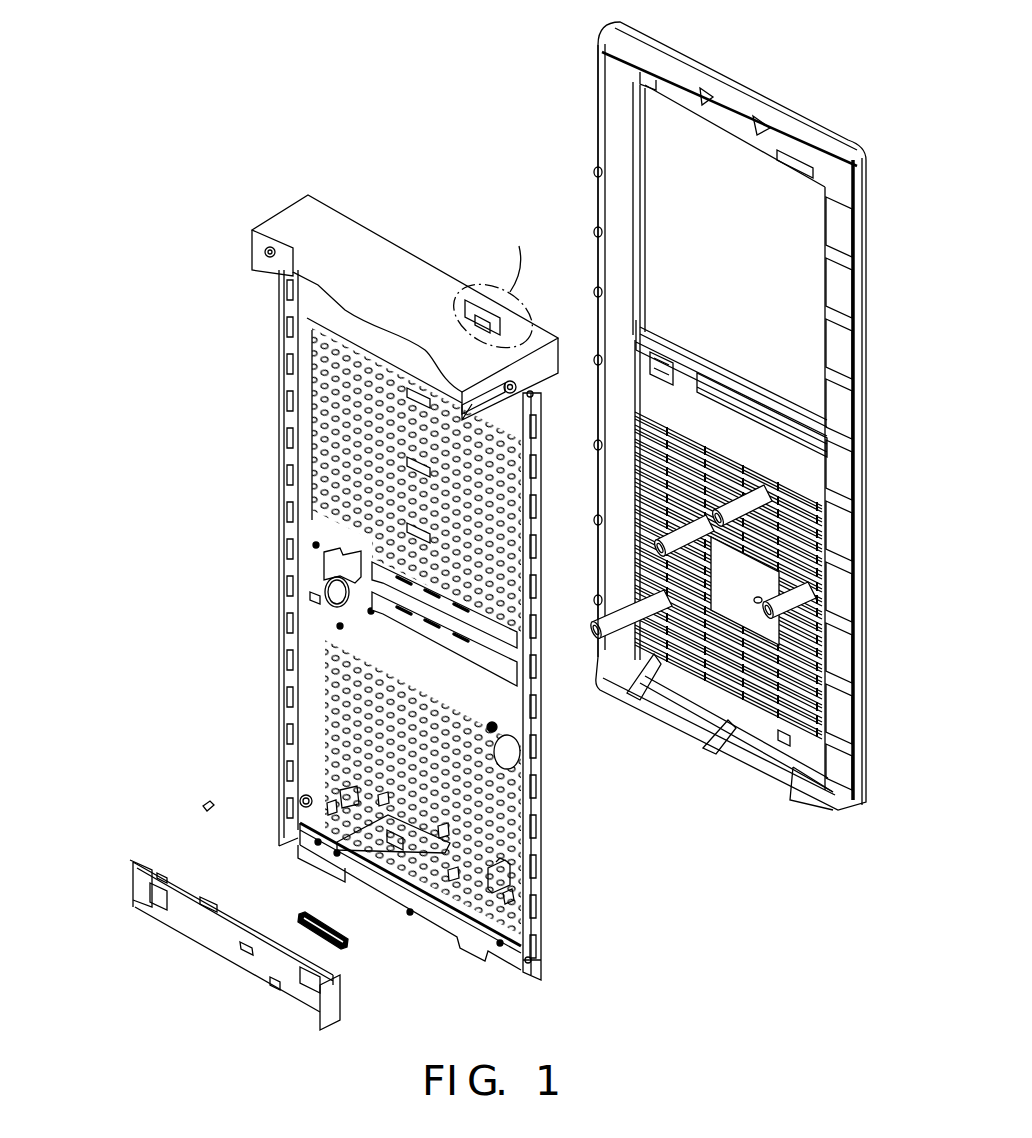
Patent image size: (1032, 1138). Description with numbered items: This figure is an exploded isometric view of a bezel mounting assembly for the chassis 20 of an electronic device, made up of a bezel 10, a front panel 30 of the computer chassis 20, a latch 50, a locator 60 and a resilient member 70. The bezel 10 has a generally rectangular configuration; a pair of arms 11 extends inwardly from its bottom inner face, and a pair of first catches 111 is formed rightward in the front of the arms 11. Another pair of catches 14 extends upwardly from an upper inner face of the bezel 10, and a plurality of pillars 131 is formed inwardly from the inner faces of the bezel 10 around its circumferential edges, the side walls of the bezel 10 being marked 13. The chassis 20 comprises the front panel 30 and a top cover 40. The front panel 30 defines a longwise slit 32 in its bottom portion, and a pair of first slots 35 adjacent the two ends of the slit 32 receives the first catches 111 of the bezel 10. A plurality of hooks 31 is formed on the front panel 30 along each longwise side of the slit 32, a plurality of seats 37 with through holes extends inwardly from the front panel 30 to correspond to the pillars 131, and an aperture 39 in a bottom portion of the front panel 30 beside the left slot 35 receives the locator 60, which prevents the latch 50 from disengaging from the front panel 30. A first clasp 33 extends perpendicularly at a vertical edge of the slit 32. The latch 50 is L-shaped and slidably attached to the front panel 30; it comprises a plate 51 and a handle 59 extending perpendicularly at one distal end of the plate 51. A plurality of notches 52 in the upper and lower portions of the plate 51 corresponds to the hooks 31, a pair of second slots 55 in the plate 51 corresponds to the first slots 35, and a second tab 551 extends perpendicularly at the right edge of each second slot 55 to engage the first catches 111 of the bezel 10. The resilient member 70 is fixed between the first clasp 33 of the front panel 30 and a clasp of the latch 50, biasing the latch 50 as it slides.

The bezel 10 is at (594, 160).
The arms 11 is at (828, 702).
The first catches 111 is at (783, 735).
The side wall 13 is at (626, 495).
The pillars 131 is at (845, 762).
The catches 14 is at (655, 78).
The chassis 20 is at (167, 203).
The front panel 30 is at (318, 603).
The hooks 31 is at (293, 748).
The slit 32 is at (430, 855).
The first clasp 33 is at (372, 852).
The first slots 35 is at (510, 870).
The seats 37 is at (298, 808).
The aperture 39 is at (318, 779).
The top cover 40 is at (280, 232).
The latch 50 is at (122, 857).
The plate 51 is at (192, 915).
The notches 52 is at (158, 875).
The second slots 55 is at (152, 895).
The second tab 551 is at (150, 910).
The handle 59 is at (330, 1000).
The locator 60 is at (196, 799).
The resilient member 70 is at (292, 910).